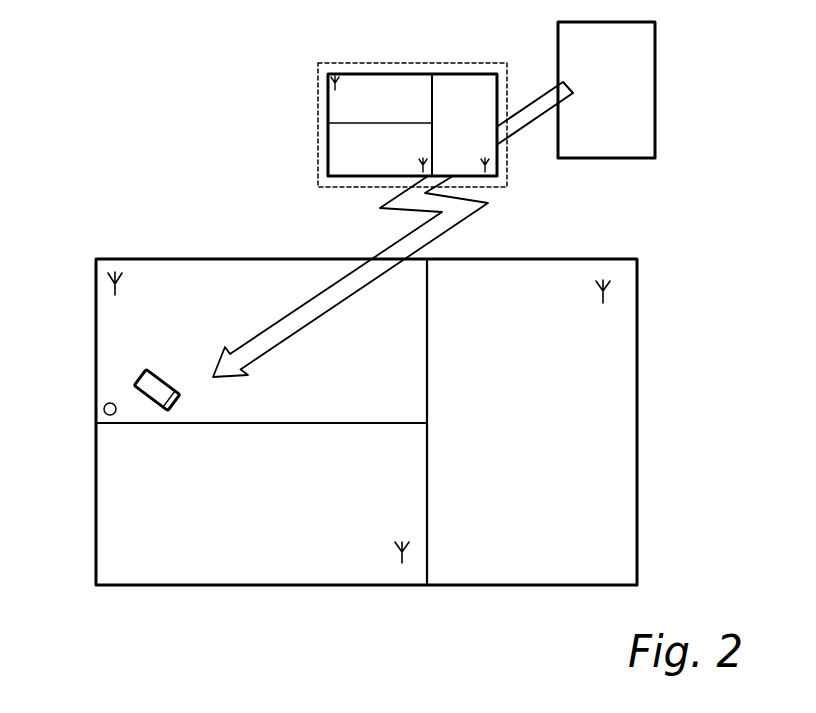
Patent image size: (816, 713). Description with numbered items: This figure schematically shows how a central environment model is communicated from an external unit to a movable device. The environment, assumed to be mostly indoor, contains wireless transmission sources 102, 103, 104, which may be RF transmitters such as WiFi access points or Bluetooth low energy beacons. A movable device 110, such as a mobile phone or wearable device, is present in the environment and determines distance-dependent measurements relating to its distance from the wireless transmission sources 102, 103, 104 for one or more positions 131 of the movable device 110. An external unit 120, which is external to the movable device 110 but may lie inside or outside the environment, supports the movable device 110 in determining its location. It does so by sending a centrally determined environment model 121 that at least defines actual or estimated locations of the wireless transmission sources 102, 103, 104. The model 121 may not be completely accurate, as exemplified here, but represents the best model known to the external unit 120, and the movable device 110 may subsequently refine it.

The wireless transmission source 102 is at (102, 285).
The wireless transmission source 103 is at (397, 558).
The wireless transmission source 104 is at (607, 291).
The movable device 110 is at (180, 403).
The external unit 120 is at (656, 82).
The centrally determined environment model 121 is at (401, 62).
The position 131 is at (110, 416).